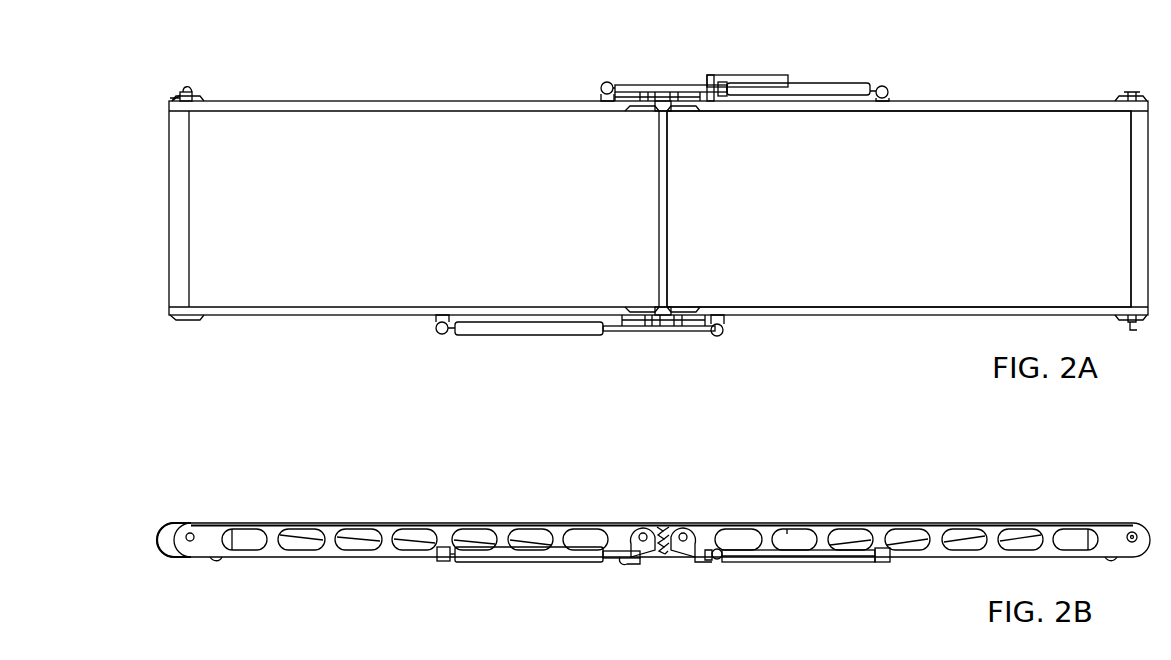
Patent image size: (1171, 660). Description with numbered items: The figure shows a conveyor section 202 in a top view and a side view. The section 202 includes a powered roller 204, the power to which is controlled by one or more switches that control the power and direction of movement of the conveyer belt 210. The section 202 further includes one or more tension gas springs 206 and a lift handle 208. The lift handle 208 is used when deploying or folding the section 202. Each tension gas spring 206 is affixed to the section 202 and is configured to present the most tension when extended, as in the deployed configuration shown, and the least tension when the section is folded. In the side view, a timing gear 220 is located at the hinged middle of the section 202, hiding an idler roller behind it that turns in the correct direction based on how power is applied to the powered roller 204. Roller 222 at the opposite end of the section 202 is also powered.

In FIG. 2A, the section 202 is at (121, 61).
In FIG. 2A, the powered roller 204 is at (192, 92).
In FIG. 2B, the powered roller 204 is at (213, 558).
In FIG. 2A, the tension gas spring 206 is at (862, 84).
In FIG. 2B, the tension gas spring 206 is at (468, 548).
In FIG. 2A, the lift handle 208 is at (755, 78).
In FIG. 2A, the conveyer belt 210 is at (898, 303).
In FIG. 2B, the conveyer belt 210 is at (916, 543).
In FIG. 2B, the timing gear 220 is at (668, 530).
In FIG. 2B, the roller 222 is at (1131, 558).